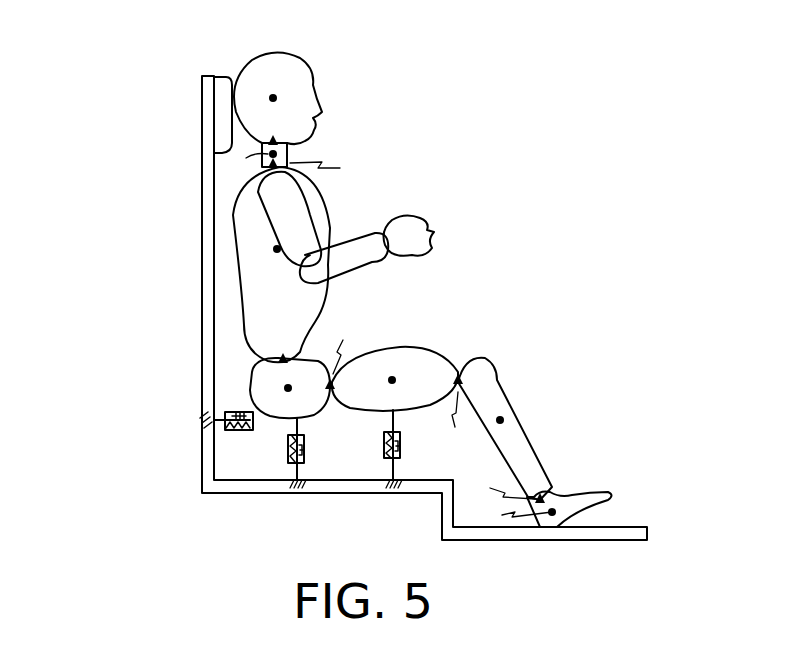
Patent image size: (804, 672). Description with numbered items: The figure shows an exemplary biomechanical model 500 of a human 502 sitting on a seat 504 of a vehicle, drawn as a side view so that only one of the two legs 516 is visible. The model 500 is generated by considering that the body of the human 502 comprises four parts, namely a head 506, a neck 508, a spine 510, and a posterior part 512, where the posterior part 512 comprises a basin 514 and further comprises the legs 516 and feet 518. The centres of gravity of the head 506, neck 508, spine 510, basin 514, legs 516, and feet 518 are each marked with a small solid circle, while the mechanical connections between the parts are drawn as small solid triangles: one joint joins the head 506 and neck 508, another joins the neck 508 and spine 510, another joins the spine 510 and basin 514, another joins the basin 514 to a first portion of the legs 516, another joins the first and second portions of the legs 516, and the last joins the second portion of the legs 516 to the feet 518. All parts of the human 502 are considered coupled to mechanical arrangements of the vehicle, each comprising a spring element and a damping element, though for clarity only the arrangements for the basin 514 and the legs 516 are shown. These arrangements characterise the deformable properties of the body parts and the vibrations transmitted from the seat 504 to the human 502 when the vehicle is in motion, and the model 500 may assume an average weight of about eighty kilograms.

The biomechanical model 500 is at (358, 275).
The human 502 is at (356, 279).
The seat 504 is at (372, 308).
The head 506 is at (236, 89).
The neck 508 is at (337, 148).
The spine 510 is at (267, 264).
The posterior part 512 is at (148, 421).
The basin 514 is at (218, 404).
The legs 516 is at (438, 400).
The feet 518 is at (536, 479).